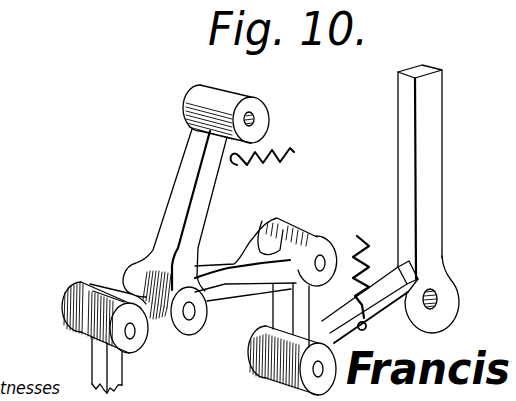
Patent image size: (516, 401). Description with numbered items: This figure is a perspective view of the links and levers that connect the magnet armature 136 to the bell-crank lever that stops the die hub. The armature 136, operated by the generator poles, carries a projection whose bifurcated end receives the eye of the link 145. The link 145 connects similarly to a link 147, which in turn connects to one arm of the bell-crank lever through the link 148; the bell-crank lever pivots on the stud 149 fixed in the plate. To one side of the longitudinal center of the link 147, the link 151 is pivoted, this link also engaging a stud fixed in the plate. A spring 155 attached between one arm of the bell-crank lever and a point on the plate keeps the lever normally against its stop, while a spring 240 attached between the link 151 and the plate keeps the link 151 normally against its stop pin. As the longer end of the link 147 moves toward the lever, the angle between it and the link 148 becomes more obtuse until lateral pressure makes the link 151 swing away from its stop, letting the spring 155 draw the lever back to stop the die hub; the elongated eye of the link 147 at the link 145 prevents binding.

The magnet armature 136 is at (433, 170).
The link 145 is at (98, 372).
The link 147 is at (210, 273).
The link 148 is at (272, 307).
The stud 149 is at (442, 297).
The link 151 is at (193, 185).
The spring 155 is at (366, 266).
The spring 240 is at (294, 151).